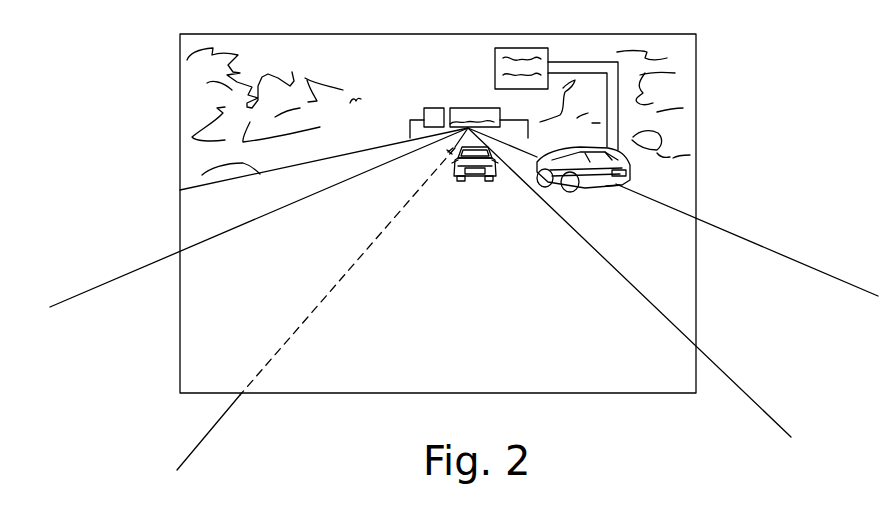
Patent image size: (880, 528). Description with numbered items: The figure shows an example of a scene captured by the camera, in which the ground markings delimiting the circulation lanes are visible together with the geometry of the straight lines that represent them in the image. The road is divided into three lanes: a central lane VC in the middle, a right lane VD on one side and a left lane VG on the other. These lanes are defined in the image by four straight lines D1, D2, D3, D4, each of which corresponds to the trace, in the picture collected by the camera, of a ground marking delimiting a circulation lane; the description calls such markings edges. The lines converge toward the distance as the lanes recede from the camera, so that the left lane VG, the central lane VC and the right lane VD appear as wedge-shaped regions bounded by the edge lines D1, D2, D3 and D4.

The straight line D1 is at (124, 273).
The straight line D2 is at (193, 450).
The straight line D3 is at (750, 397).
The straight line D4 is at (780, 252).
The left lane VG is at (290, 272).
The central lane VC is at (498, 312).
The right lane VD is at (660, 242).